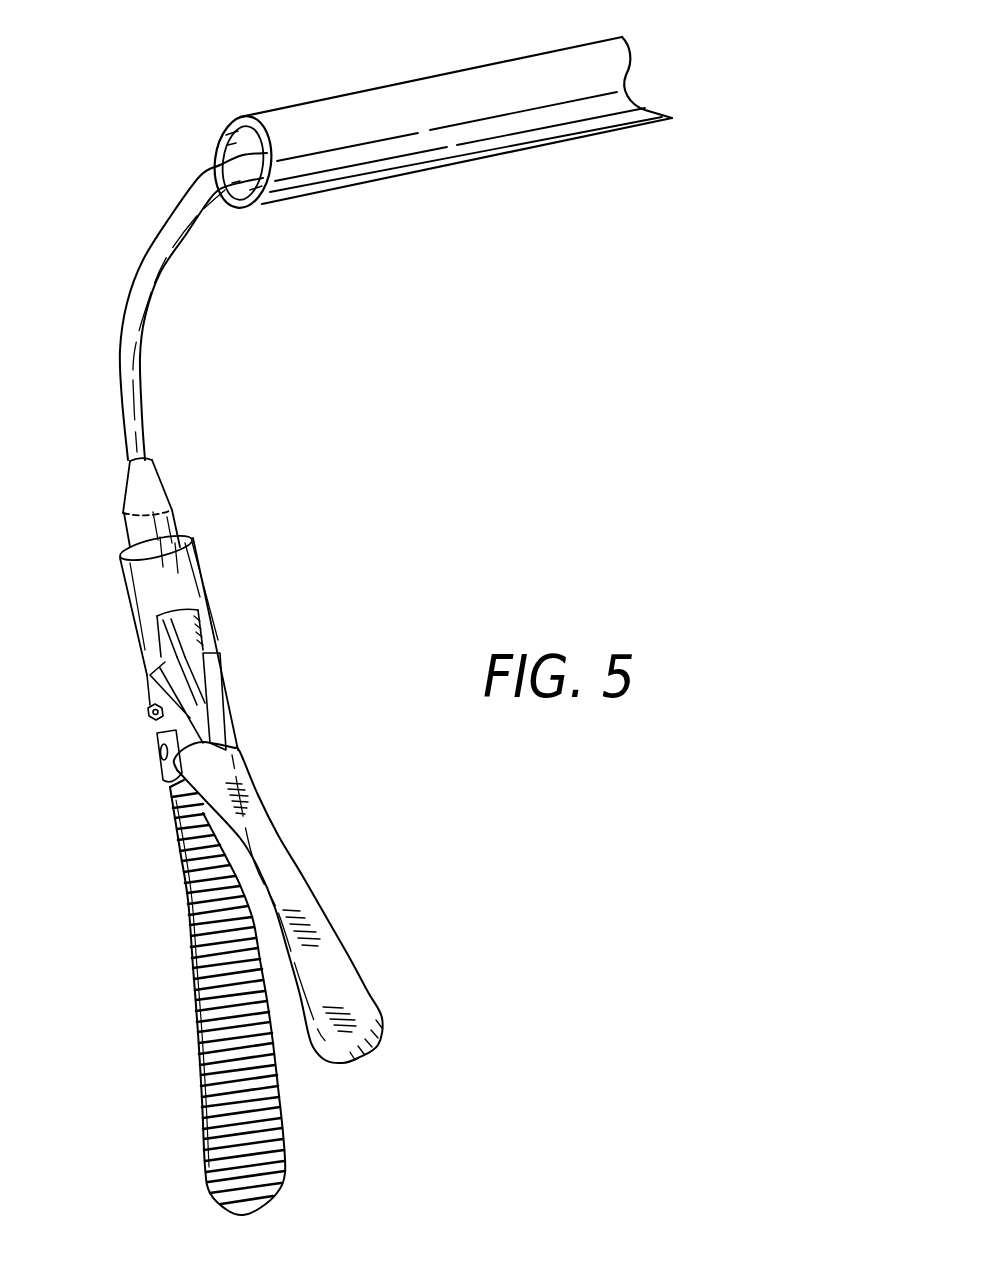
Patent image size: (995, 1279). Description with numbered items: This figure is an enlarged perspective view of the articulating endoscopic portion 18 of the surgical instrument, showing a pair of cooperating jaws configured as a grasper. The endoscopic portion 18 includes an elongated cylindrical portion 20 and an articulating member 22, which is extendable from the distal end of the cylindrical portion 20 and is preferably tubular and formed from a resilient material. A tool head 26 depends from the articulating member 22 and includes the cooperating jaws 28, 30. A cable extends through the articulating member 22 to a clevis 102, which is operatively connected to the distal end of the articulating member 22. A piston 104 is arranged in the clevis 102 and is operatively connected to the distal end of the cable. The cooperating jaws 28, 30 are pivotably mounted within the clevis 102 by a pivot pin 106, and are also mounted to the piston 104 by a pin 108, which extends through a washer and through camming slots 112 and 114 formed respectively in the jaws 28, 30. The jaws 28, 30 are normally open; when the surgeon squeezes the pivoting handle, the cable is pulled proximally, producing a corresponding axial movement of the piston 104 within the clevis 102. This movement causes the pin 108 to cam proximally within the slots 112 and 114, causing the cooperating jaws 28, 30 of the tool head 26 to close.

The endoscopic portion 18 is at (441, 149).
The elongated cylindrical portion 20 is at (440, 100).
The articulating member 22 is at (140, 268).
The tool head 26 is at (214, 836).
The cooperating jaw 28 is at (200, 1018).
The cooperating jaw 30 is at (280, 857).
The clevis 102 is at (177, 568).
The piston 104 is at (180, 630).
The pivot pin 106 is at (155, 725).
The pin 108 is at (163, 758).
The camming slot 112 is at (185, 662).
The camming slot 114 is at (148, 710).